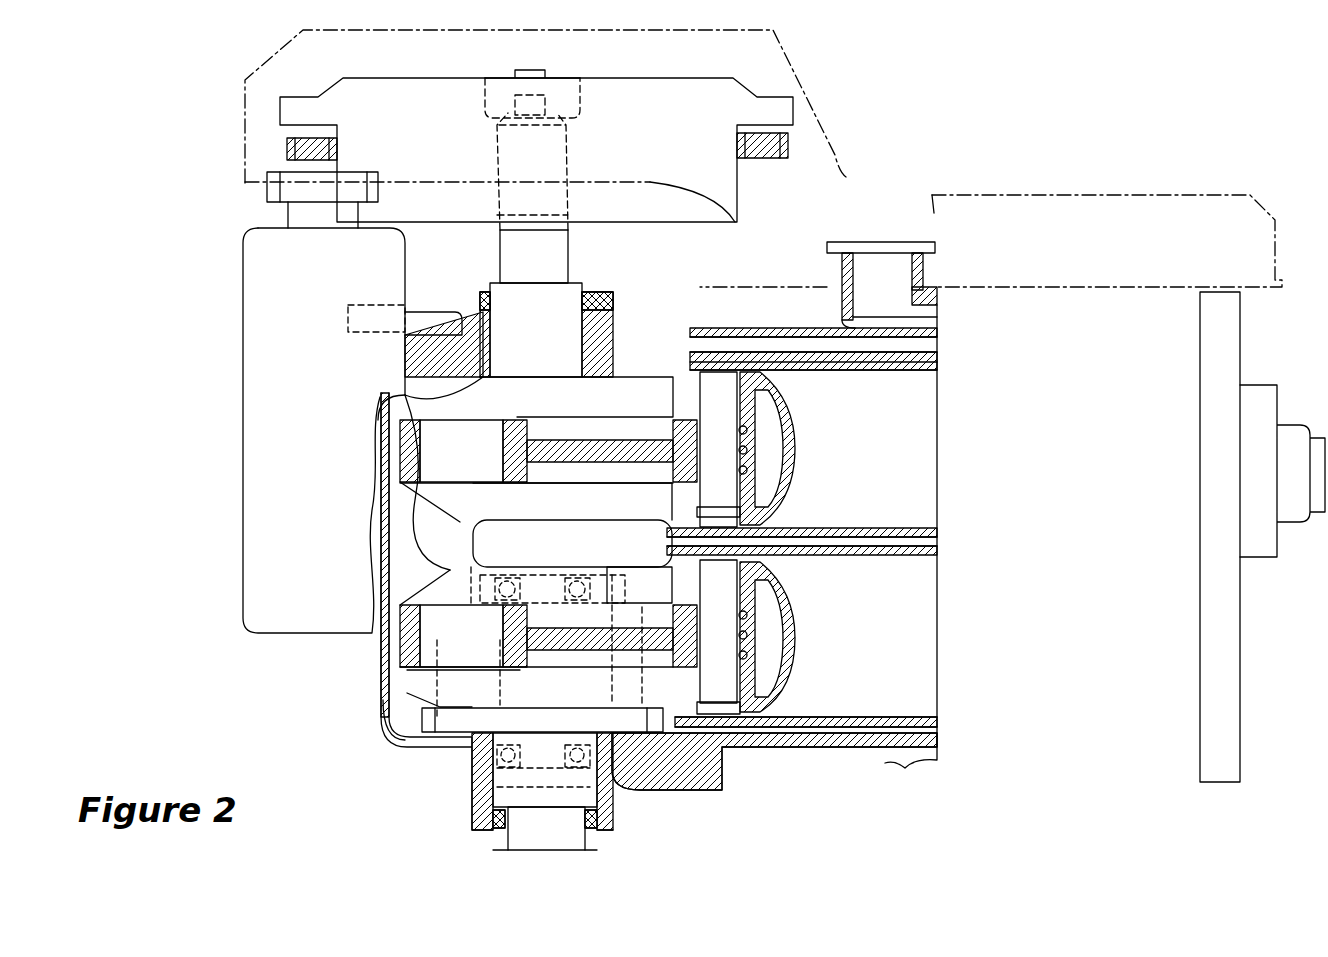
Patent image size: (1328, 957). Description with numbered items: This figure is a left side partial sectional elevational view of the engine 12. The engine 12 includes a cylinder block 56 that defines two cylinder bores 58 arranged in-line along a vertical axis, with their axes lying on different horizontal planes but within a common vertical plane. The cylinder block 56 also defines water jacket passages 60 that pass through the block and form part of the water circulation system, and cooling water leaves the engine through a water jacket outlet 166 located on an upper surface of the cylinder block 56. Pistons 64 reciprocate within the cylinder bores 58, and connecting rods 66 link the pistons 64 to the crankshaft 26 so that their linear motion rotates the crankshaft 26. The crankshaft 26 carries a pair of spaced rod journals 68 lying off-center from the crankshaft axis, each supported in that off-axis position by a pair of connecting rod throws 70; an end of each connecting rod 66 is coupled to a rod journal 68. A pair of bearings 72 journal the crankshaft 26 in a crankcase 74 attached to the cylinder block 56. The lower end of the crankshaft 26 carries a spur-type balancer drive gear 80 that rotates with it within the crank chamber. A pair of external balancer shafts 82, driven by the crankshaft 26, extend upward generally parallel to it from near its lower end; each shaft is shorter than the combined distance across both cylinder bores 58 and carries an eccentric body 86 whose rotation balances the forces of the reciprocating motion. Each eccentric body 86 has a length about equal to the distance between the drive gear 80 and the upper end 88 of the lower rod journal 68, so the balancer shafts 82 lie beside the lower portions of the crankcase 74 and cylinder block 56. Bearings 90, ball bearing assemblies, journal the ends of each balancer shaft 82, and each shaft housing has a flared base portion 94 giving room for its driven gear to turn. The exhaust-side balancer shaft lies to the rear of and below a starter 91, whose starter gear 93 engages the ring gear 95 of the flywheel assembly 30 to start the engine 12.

The engine 12 is at (910, 104).
The crankshaft 26 is at (578, 258).
The flywheel assembly 30 is at (790, 78).
The cylinder block 56 is at (952, 738).
The cylinder bores 58 is at (880, 375).
The water jacket passages 60 is at (930, 337).
The pistons 64 is at (795, 410).
The connecting rods 66 is at (625, 438).
The rod journals 68 is at (463, 627).
The connecting rod throws 70 is at (460, 403).
The bearings 72 is at (470, 300).
The crankcase 74 is at (392, 780).
The balancer drive gear 80 is at (450, 735).
The balancer shafts 82 is at (520, 693).
The eccentric body 86 is at (598, 690).
The upper end 88 is at (413, 596).
The bearings 90 is at (532, 773).
The starter 91 is at (240, 355).
The starter gear 93 is at (270, 190).
The flared base portion 94 is at (403, 718).
The ring gear 95 is at (290, 148).
The water jacket outlet 166 is at (935, 250).